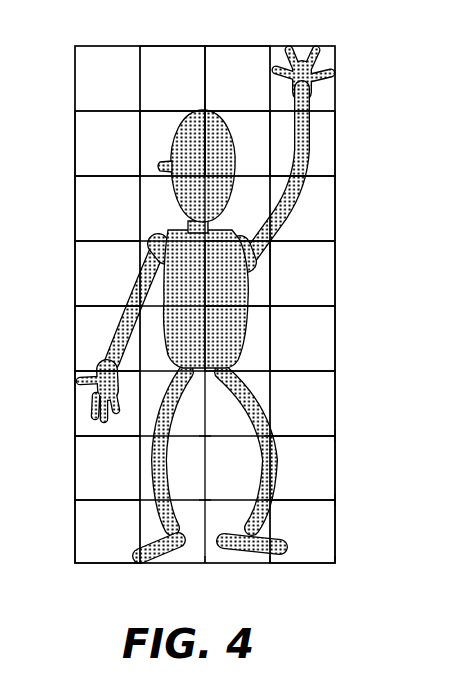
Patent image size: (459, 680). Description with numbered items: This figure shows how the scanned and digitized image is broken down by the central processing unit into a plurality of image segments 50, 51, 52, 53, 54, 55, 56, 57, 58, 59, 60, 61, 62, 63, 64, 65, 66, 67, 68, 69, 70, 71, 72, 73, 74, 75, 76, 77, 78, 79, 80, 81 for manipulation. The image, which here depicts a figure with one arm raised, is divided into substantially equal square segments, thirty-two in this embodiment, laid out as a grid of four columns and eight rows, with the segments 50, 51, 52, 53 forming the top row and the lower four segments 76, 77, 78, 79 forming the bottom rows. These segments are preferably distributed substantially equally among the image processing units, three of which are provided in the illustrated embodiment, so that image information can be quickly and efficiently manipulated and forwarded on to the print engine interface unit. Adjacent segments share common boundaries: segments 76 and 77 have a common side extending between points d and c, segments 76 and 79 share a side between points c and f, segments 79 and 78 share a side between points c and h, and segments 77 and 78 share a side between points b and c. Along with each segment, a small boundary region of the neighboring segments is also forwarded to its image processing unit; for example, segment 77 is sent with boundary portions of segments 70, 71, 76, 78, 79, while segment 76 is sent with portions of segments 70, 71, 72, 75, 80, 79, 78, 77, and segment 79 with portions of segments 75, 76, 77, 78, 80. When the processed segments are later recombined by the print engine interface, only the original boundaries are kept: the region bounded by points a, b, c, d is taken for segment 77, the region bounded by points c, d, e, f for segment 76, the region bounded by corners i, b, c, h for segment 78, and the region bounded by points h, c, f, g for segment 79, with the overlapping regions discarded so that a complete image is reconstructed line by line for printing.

The image segment 50 is at (115, 46).
The image segment 51 is at (180, 46).
The image segment 52 is at (245, 46).
The image segment 53 is at (305, 46).
The image segment 54 is at (323, 168).
The image segment 55 is at (260, 133).
The image segment 56 is at (160, 126).
The image segment 57 is at (106, 166).
The image segment 58 is at (106, 230).
The image segment 59 is at (157, 191).
The image segment 60 is at (262, 199).
The image segment 61 is at (325, 233).
The image segment 62 is at (325, 294).
The image segment 63 is at (265, 264).
The image segment 64 is at (150, 242).
The image segment 65 is at (106, 294).
The image segment 66 is at (90, 350).
The image segment 67 is at (158, 322).
The image segment 68 is at (258, 329).
The image segment 69 is at (325, 362).
The image segment 70 is at (325, 397).
The image segment 71 is at (300, 386).
The image segment 72 is at (158, 383).
The image segment 73 is at (107, 425).
The image segment 74 is at (107, 490).
The image segment 75 is at (160, 448).
The image segment 76 is at (320, 455).
The image segment 77 is at (325, 476).
The image segment 78 is at (327, 550).
The image segment 79 is at (262, 518).
The image segment 80 is at (160, 518).
The image segment 81 is at (107, 555).
The corner point a is at (335, 436).
The corner point b is at (335, 500).
The corner point c is at (271, 498).
The corner point d is at (271, 436).
The corner point e is at (207, 436).
The corner point f is at (205, 498).
The corner point g is at (206, 565).
The corner point h is at (271, 565).
The corner point i is at (335, 565).